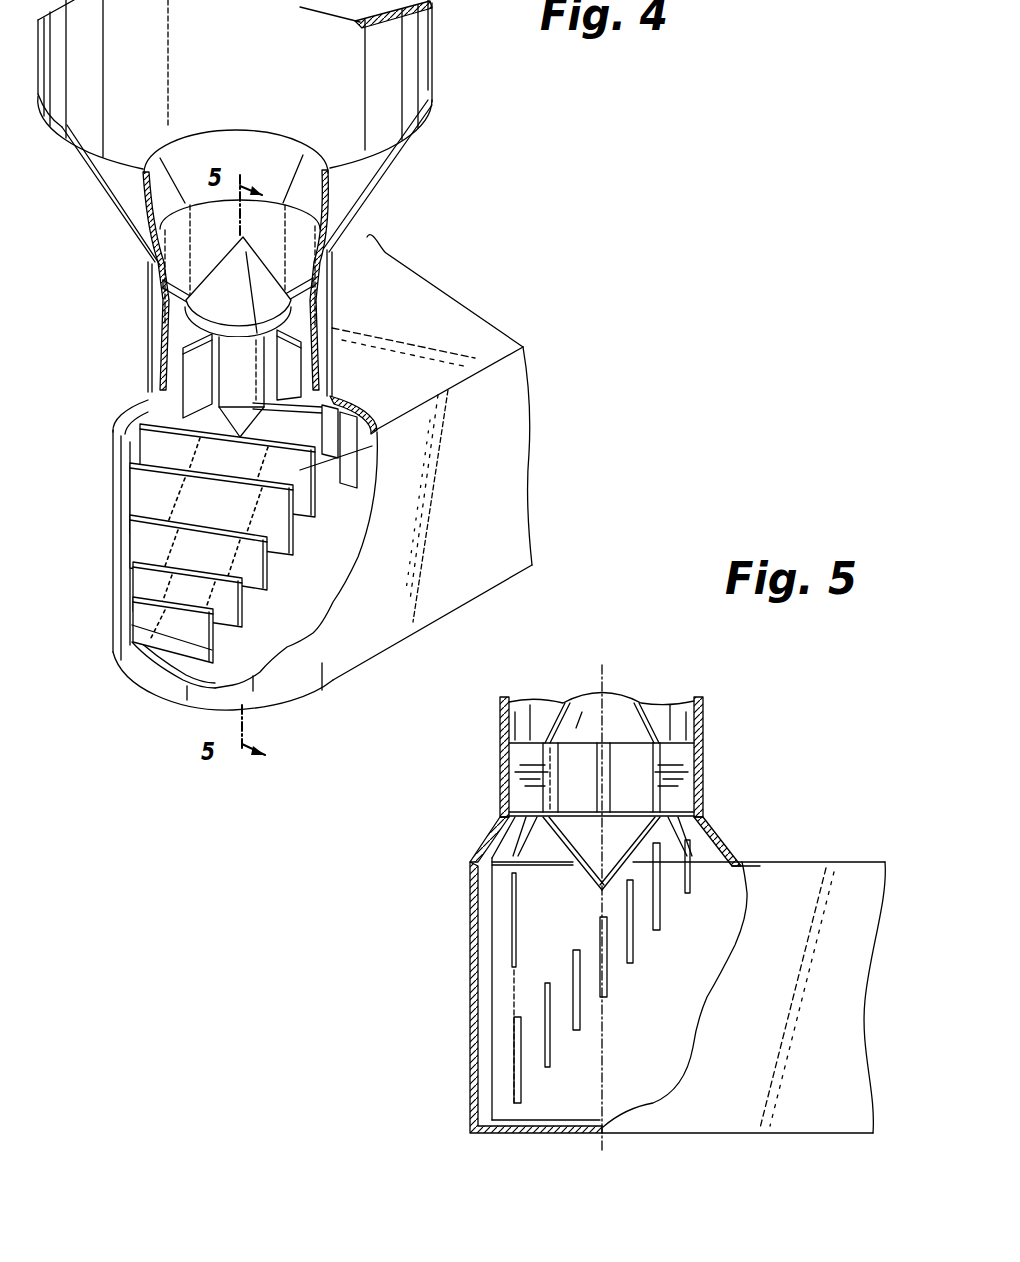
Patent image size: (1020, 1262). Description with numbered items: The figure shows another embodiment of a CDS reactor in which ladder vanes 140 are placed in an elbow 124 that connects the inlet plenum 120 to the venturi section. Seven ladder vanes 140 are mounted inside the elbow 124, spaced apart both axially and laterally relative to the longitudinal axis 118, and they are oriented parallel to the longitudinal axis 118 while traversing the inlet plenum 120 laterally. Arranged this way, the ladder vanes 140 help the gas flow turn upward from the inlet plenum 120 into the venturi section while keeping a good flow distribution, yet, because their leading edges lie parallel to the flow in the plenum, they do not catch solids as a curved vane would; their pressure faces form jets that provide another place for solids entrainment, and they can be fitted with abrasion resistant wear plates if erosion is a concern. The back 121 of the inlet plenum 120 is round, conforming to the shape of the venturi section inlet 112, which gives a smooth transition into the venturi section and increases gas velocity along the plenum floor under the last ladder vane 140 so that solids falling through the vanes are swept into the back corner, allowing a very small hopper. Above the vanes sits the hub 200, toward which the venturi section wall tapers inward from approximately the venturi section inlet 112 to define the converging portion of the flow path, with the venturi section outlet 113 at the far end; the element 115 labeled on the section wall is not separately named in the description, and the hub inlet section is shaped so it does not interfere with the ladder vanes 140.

In FIG. 5, the venturi section inlet 112 is at (510, 858).
In FIG. 4, the venturi section outlet 113 is at (145, 263).
In FIG. 5, the inlet wall 115 is at (518, 762).
In FIG. 5, the longitudinal axis 118 is at (602, 672).
In FIG. 4, the inlet plenum 120 is at (454, 328).
In FIG. 5, the inlet plenum 120 is at (788, 890).
In FIG. 4, the back of the inlet plenum 121 is at (147, 438).
In FIG. 5, the back of the inlet plenum 121 is at (503, 903).
In FIG. 4, the elbow 124 is at (346, 548).
In FIG. 5, the elbow 124 is at (690, 1008).
In FIG. 4, the ladder vane 140 is at (253, 612).
In FIG. 5, the ladder vane 140 is at (556, 960).
In FIG. 4, the hub 200 is at (204, 270).
In FIG. 5, the hub 200 is at (550, 718).